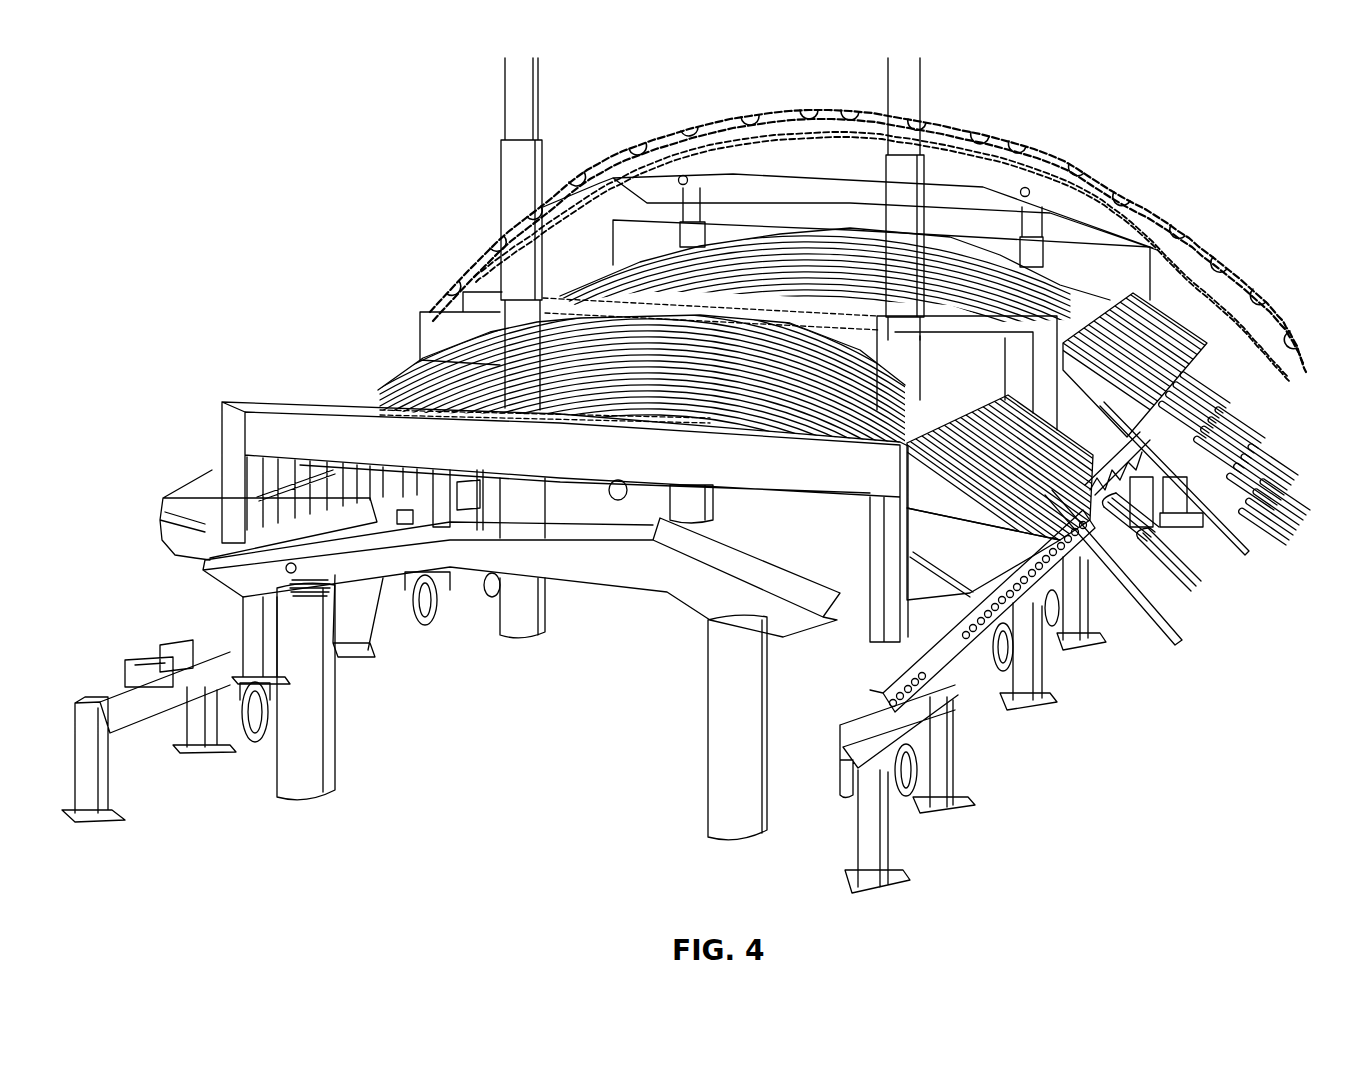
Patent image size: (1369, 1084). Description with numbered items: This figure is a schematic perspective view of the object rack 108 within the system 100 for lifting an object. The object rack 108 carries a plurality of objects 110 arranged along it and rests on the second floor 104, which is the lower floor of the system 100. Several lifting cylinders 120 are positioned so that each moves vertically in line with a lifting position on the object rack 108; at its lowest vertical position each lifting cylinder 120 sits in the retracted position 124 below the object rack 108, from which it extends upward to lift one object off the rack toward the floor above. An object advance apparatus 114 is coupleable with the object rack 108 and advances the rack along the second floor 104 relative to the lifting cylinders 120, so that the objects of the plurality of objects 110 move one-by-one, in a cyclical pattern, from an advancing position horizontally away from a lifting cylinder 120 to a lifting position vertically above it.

The system for lifting an object 100 is at (1120, 95).
The second floor 104 is at (500, 882).
The object rack 108 is at (632, 243).
The plurality of objects 110 is at (1270, 505).
The object advance apparatus 114 is at (1170, 530).
The lifting cylinder 120 is at (518, 92).
The retracted position 124 is at (693, 592).